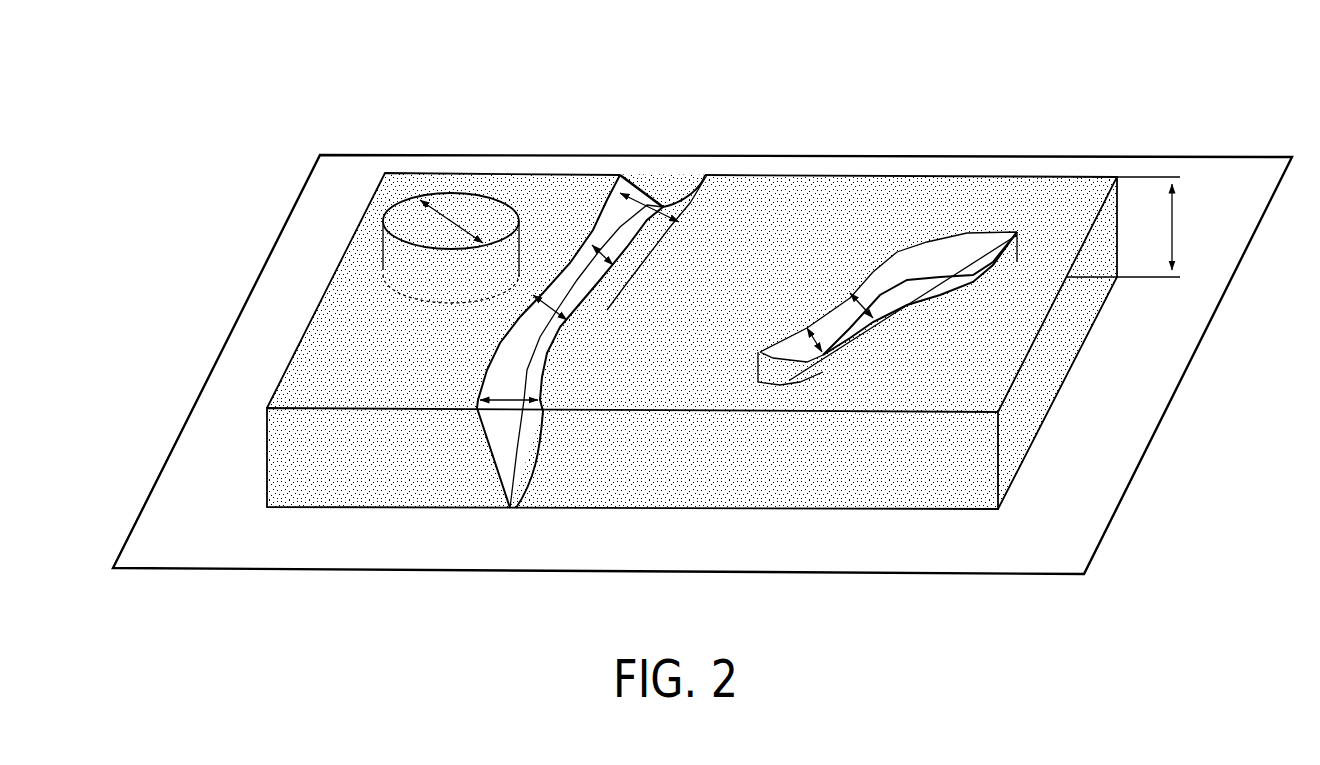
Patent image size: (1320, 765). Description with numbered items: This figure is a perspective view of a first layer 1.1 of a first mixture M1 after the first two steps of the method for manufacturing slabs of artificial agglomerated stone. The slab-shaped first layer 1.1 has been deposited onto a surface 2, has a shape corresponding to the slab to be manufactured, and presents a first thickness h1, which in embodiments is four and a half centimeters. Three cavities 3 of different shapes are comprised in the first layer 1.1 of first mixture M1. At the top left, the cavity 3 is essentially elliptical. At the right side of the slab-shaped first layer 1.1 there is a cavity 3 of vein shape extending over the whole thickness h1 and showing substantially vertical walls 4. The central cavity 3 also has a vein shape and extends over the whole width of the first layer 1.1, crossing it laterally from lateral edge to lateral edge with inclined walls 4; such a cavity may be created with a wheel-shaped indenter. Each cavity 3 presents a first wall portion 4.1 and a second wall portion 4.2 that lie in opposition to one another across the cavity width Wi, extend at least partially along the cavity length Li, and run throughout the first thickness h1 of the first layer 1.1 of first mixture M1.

The first layer 1.1 is at (334, 124).
The surface 2 is at (967, 535).
The cavity 3 is at (639, 176).
The walls 4 is at (875, 256).
The first wall portion 4.1 is at (383, 262).
The second wall portion 4.2 is at (447, 192).
The cavity width Wi is at (380, 215).
The cavity length Li is at (540, 283).
The first thickness h1 is at (1139, 227).
The first mixture M1 is at (692, 341).